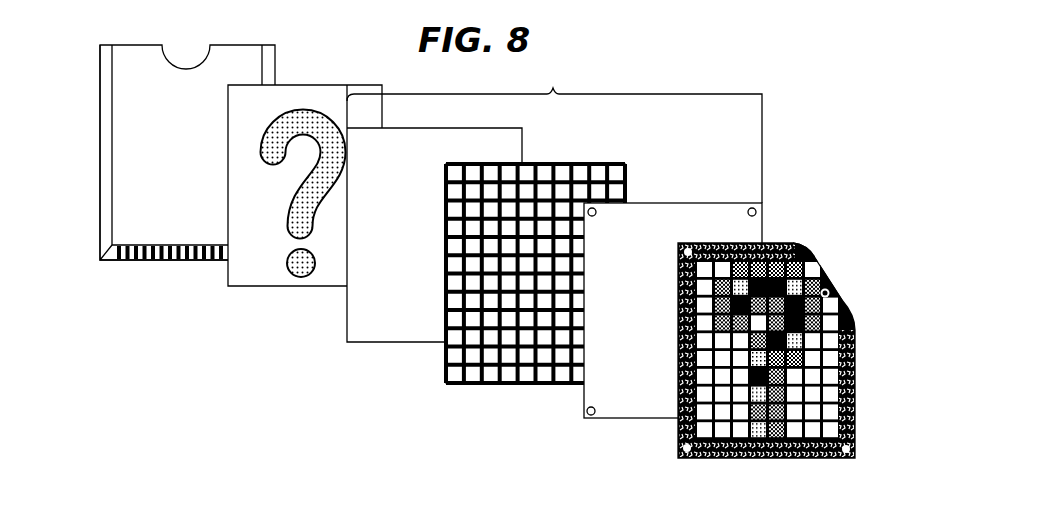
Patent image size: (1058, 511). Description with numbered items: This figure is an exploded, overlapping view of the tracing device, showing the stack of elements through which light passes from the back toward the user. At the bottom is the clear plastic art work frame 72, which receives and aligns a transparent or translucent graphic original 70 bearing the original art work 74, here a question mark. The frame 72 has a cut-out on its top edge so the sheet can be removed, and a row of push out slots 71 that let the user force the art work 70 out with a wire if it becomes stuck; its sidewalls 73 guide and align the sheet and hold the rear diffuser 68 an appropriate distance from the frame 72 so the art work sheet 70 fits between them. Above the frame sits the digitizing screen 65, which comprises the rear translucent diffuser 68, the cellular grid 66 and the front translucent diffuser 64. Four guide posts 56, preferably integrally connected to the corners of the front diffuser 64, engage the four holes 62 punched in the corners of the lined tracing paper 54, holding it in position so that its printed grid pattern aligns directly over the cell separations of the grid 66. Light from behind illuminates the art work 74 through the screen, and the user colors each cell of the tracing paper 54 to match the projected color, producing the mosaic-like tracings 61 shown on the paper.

The lined tracing paper 54 is at (856, 350).
The guide posts 56 is at (757, 208).
The tracings 61 is at (783, 242).
The holes 62 is at (828, 290).
The front translucent diffuser 64 is at (640, 325).
The digitizing screen 65 is at (554, 133).
The grid 66 is at (562, 178).
The rear translucent diffuser 68 is at (410, 249).
The graphic original 70 is at (305, 169).
The push out slots 71 is at (153, 259).
The art work frame 72 is at (182, 168).
The sidewalls 73 is at (102, 203).
The original art work 74 is at (297, 208).